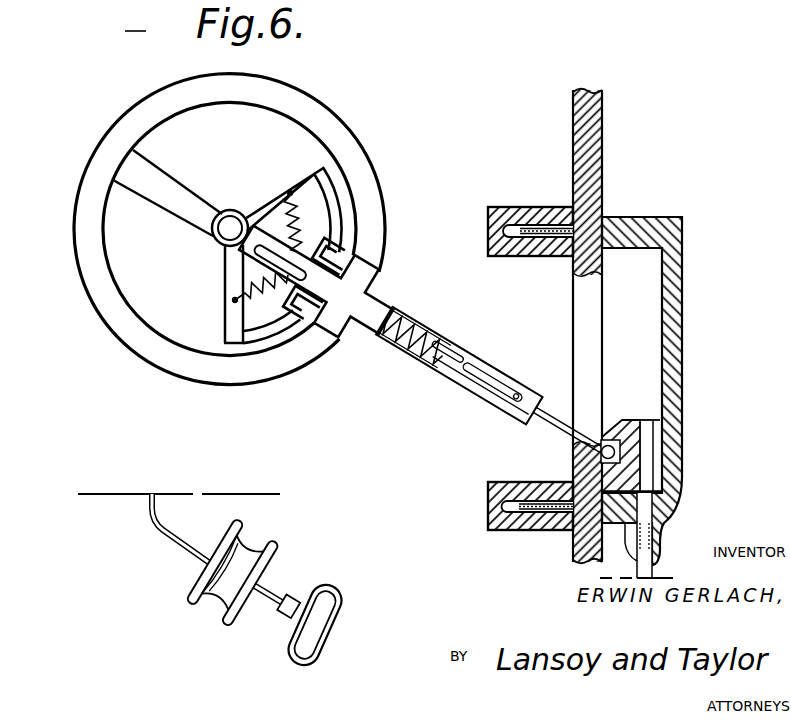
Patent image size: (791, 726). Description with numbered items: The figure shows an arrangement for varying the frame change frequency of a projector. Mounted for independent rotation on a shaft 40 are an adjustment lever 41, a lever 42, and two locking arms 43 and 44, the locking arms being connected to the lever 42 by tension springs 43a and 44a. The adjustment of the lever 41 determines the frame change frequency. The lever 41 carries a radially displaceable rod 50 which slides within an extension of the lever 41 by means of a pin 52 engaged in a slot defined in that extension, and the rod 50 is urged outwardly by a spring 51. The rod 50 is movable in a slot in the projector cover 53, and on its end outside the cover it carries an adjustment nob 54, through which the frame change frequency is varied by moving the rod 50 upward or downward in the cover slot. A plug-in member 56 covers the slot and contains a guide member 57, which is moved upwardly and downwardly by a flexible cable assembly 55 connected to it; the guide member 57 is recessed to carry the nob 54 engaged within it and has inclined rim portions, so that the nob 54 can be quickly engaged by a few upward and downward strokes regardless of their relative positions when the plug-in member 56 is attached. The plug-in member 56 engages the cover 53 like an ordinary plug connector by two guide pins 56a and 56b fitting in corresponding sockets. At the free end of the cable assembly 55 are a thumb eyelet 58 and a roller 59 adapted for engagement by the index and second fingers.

The shaft 40 is at (229, 221).
The adjustment lever 41 is at (374, 312).
The lever 42 is at (256, 243).
The locking arm 43 is at (304, 312).
The tension spring 43a is at (233, 299).
The locking arm 44 is at (336, 242).
The tension spring 44a is at (300, 213).
The rod 50 is at (544, 407).
The spring 51 is at (428, 308).
The pin 52 is at (507, 393).
The projector cover 53 is at (588, 148).
The adjustment nob 54 is at (640, 419).
The flexible cable assembly 55 is at (637, 567).
The plug-in member 56 is at (665, 234).
The guide pin 56a is at (545, 224).
The guide pin 56b is at (535, 508).
The guide member 57 is at (630, 449).
The thumb eyelet 58 is at (287, 653).
The roller 59 is at (198, 586).